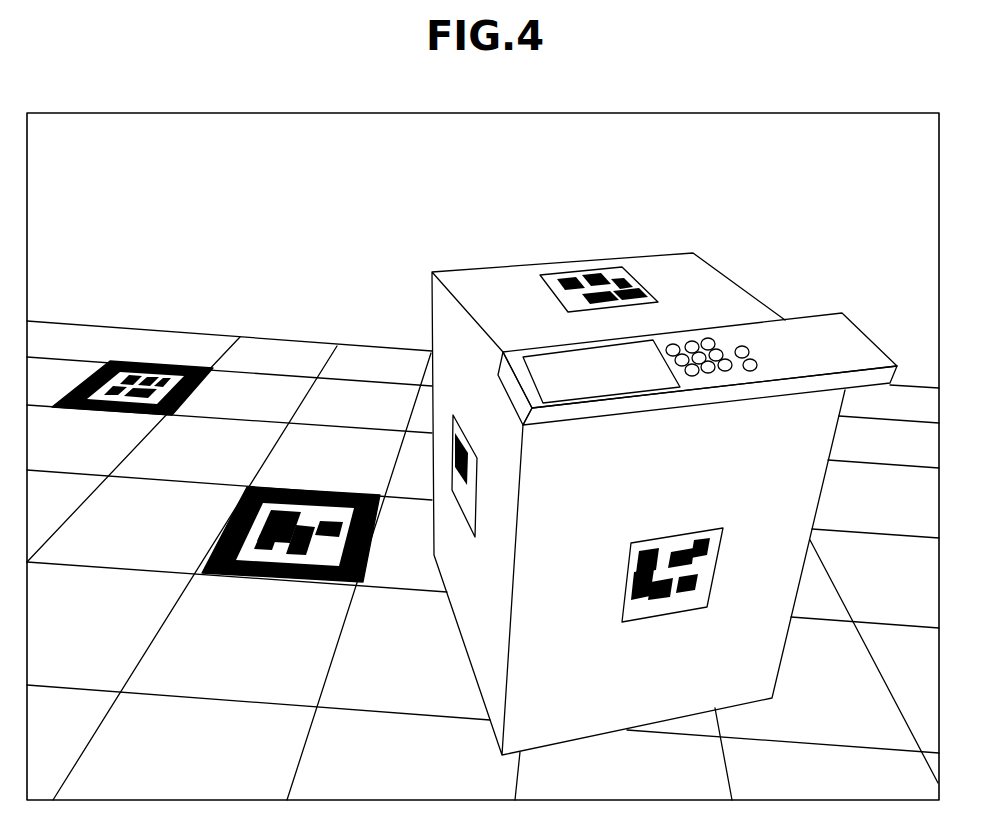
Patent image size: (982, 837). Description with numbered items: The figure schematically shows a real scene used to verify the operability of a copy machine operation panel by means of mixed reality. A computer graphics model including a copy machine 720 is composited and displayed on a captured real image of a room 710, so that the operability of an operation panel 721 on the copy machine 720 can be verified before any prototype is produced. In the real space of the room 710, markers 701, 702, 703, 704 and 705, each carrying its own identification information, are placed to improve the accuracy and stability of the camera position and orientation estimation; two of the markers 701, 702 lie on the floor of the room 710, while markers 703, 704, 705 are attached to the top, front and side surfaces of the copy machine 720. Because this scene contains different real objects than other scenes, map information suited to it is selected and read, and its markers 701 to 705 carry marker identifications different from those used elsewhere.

The marker 701 is at (162, 361).
The marker 702 is at (307, 493).
The marker 703 is at (573, 275).
The marker 704 is at (645, 610).
The marker 705 is at (468, 499).
The room 710 is at (278, 354).
The copy machine 720 is at (741, 234).
The operation panel 721 is at (813, 331).